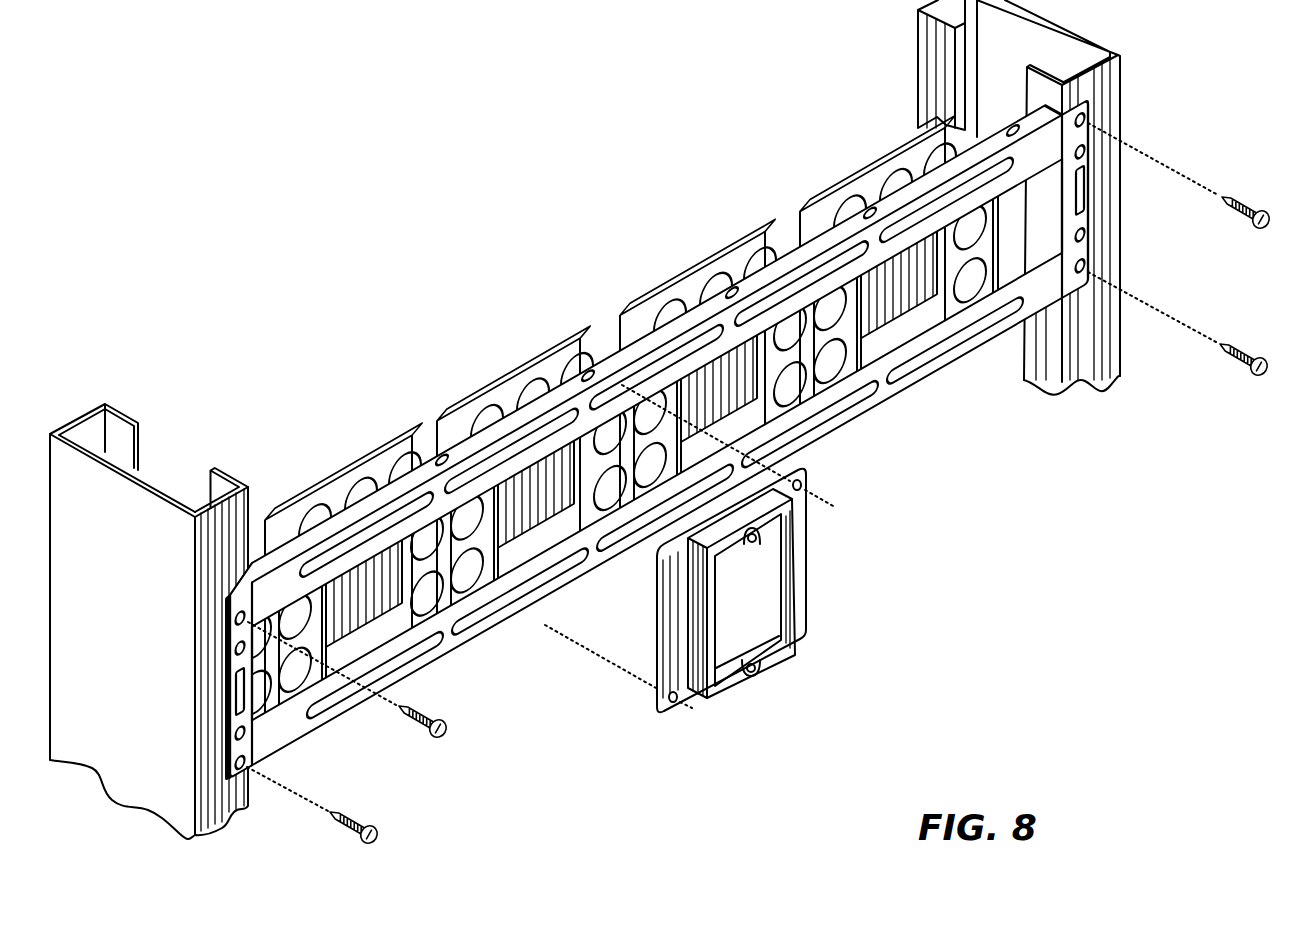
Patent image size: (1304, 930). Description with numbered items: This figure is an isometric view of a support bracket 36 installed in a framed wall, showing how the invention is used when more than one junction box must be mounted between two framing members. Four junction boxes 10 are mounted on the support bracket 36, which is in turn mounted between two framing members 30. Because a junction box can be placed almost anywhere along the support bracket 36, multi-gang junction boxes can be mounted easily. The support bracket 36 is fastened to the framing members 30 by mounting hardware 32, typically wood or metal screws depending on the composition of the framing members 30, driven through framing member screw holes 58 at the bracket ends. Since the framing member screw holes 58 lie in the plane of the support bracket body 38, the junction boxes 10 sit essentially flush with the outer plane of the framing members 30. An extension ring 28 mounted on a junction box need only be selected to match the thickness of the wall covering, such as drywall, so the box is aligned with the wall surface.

The junction box 10 is at (355, 452).
The extension ring 28 is at (750, 690).
The framing member 30 is at (95, 398).
The mounting hardware 32 is at (1248, 245).
The support bracket 36 is at (468, 160).
The support bracket body 38 is at (706, 444).
The framing member screw hole 58 is at (247, 738).